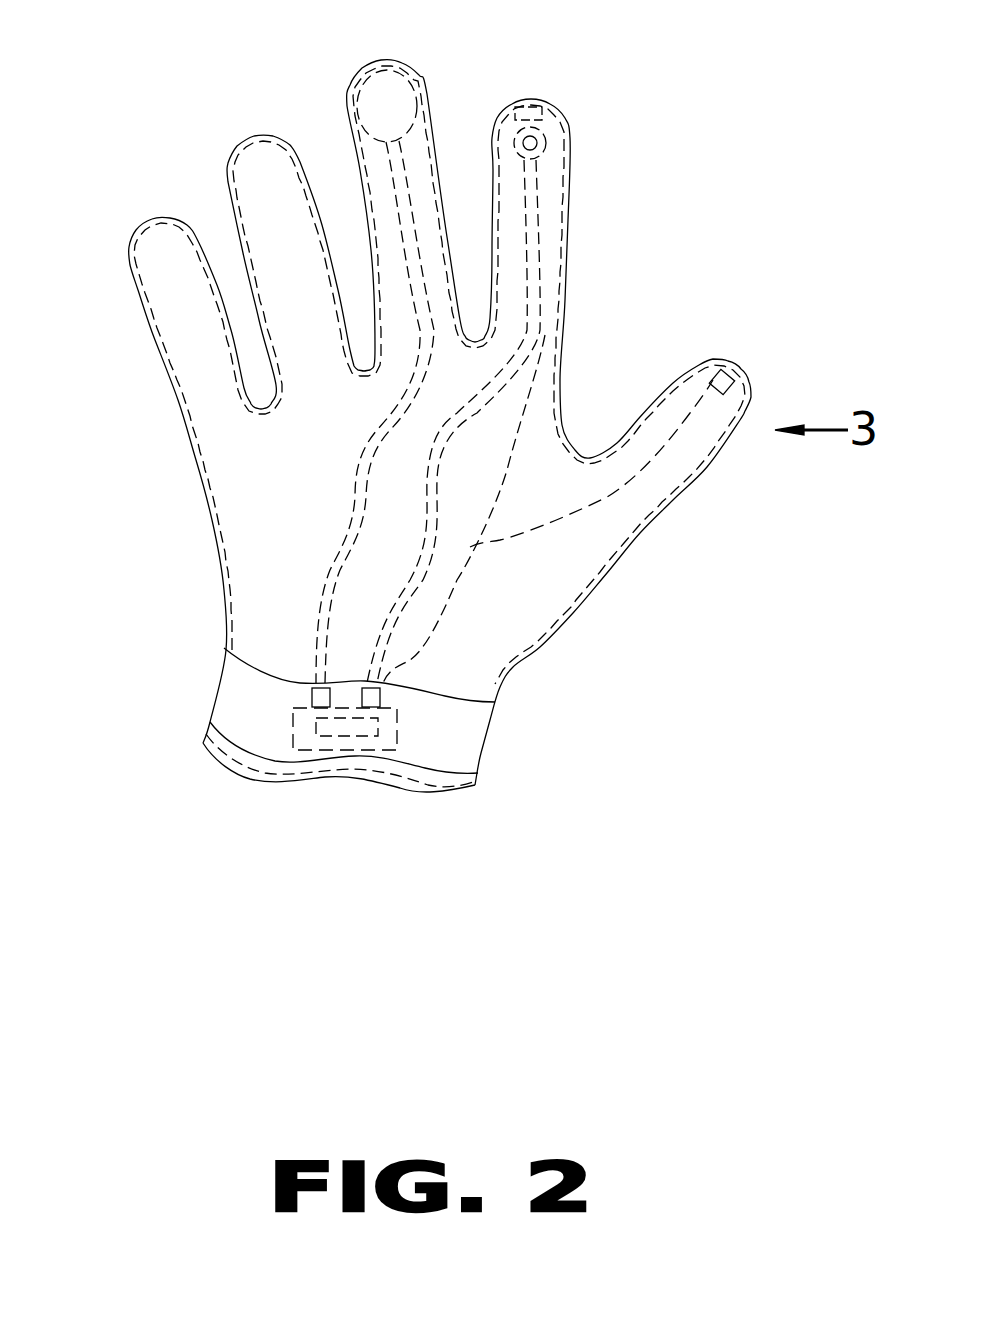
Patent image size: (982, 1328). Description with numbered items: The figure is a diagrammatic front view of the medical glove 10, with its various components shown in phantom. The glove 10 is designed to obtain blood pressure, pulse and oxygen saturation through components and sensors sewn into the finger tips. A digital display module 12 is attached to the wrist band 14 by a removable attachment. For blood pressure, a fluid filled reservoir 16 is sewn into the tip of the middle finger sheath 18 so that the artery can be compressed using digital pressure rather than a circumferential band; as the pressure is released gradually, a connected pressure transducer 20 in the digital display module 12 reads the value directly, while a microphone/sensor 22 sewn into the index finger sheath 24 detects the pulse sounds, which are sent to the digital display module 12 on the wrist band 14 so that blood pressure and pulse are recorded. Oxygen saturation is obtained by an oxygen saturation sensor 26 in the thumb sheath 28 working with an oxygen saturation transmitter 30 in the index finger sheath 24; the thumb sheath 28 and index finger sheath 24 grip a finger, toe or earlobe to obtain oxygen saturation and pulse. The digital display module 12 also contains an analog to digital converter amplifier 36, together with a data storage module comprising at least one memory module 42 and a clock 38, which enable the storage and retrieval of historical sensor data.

The medical glove 10 is at (197, 486).
The digital display module 12 is at (290, 730).
The wrist band 14 is at (463, 742).
The fluid filled reservoir 16 is at (403, 77).
The middle finger sheath 18 is at (377, 167).
The pressure transducer 20 is at (312, 692).
The microphone/sensor 22 is at (548, 148).
The index finger sheath 24 is at (567, 268).
The oxygen saturation sensor 26 is at (733, 372).
The thumb sheath 28 is at (647, 507).
The oxygen saturation transmitter 30 is at (542, 112).
The analog to digital converter amplifier 36 is at (385, 697).
The clock 38 is at (298, 744).
The memory module 42 is at (348, 745).